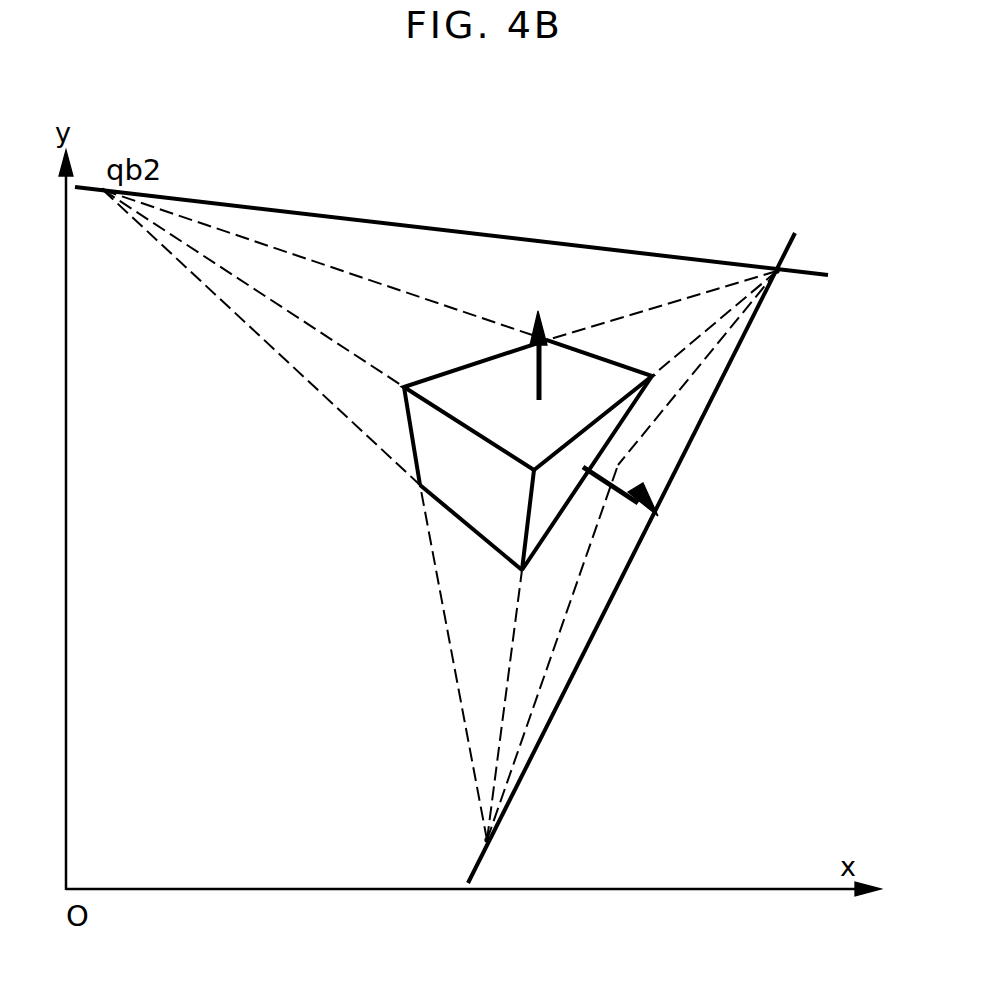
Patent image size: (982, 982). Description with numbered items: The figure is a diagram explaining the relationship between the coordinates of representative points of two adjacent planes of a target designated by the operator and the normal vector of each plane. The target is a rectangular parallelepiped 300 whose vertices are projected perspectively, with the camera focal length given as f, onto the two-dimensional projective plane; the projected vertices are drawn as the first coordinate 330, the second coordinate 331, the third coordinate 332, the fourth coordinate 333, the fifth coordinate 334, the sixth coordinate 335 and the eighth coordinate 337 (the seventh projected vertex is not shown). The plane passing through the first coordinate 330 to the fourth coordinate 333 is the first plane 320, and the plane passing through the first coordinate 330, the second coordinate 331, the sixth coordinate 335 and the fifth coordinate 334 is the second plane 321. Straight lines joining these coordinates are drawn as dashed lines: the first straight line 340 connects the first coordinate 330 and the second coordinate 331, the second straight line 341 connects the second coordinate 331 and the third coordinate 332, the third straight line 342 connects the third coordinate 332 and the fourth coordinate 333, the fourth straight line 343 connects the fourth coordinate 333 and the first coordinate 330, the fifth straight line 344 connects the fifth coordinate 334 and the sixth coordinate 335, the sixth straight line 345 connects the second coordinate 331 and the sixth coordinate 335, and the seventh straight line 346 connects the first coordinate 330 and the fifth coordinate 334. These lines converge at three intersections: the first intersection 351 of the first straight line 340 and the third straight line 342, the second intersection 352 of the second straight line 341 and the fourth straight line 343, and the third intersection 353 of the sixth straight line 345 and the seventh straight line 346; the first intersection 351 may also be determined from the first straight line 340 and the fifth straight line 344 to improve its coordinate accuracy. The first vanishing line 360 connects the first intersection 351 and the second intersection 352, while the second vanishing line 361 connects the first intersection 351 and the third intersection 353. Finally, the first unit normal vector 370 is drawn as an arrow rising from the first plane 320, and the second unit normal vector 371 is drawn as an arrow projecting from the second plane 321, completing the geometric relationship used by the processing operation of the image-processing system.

The rectangular parallelepiped 300 is at (531, 440).
The plane F1 320 is at (502, 433).
The plane F2 321 is at (579, 506).
The coordinate q0 330 is at (500, 490).
The coordinate q1 331 is at (641, 374).
The coordinate q2 332 is at (561, 314).
The coordinate q3 333 is at (408, 338).
The coordinate q4 334 is at (545, 587).
The coordinate q5 335 is at (656, 457).
The coordinate q7 337 is at (388, 503).
The straight line L0 340 is at (710, 340).
The straight line L1 341 is at (358, 254).
The straight line L2 342 is at (642, 287).
The straight line L3 343 is at (346, 321).
The straight line L4 344 is at (705, 398).
The straight line L5 345 is at (595, 640).
The straight line L6 346 is at (487, 676).
The intersection qb1 351 is at (765, 242).
The intersection qb2 352 is at (160, 172).
The intersection qb3 353 is at (540, 849).
The vanishing line Lb1 360 is at (503, 217).
The vanishing line Lb2 361 is at (680, 572).
The unit normal vector N1 370 is at (553, 394).
The unit normal vector N2 371 is at (605, 478).